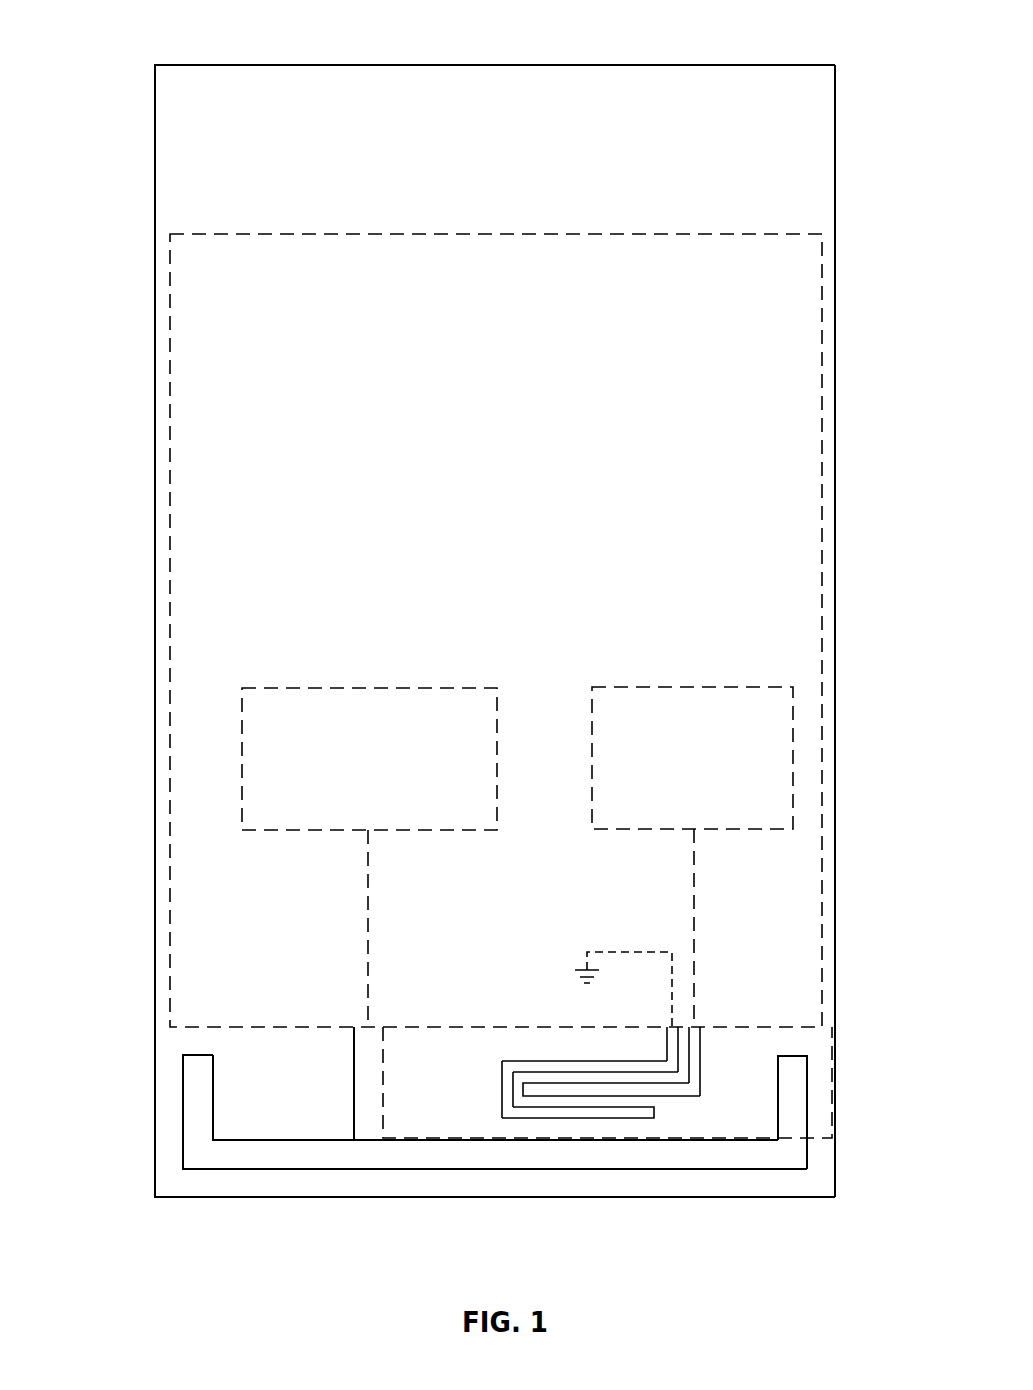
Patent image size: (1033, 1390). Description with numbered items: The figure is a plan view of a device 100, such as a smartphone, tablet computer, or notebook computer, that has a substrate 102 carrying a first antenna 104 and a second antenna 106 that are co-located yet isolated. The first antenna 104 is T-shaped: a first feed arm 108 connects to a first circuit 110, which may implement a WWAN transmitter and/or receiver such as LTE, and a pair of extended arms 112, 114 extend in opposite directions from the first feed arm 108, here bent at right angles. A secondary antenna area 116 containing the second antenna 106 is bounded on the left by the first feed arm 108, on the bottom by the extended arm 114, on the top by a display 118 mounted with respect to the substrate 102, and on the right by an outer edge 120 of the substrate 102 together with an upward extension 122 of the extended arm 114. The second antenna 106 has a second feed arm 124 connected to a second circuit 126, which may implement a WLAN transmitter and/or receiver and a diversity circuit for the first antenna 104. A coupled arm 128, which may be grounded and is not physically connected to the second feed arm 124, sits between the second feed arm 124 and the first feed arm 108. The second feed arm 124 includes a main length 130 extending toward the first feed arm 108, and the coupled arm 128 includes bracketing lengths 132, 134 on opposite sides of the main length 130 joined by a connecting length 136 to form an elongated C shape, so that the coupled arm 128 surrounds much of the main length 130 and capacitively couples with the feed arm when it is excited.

The device 100 is at (128, 133).
The substrate 102 is at (160, 1058).
The first antenna 104 is at (297, 1070).
The second antenna 106 is at (614, 1040).
The first feed arm 108 is at (360, 1081).
The first circuit 110 is at (349, 772).
The extended arm 112 is at (245, 1153).
The first extended arm 114 is at (747, 1153).
The secondary antenna area 116 is at (719, 1094).
The display 118 is at (478, 644).
The outer edge 120 is at (836, 1062).
The upward extension 122 is at (798, 1101).
The second feed arm 124 is at (706, 1056).
The second circuit 126 is at (674, 770).
The coupled arm 128 is at (543, 1121).
The main length 130 is at (679, 1090).
The bracketing length 132 is at (530, 1068).
The bracketing length 134 is at (591, 1110).
The connecting length 136 is at (508, 1086).